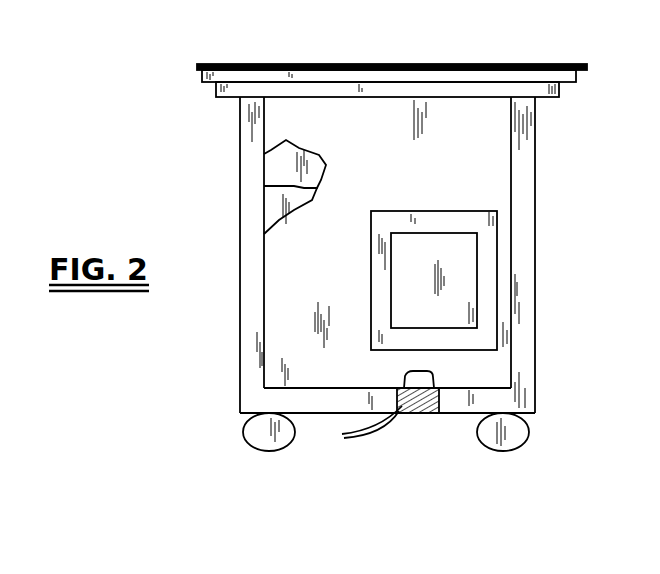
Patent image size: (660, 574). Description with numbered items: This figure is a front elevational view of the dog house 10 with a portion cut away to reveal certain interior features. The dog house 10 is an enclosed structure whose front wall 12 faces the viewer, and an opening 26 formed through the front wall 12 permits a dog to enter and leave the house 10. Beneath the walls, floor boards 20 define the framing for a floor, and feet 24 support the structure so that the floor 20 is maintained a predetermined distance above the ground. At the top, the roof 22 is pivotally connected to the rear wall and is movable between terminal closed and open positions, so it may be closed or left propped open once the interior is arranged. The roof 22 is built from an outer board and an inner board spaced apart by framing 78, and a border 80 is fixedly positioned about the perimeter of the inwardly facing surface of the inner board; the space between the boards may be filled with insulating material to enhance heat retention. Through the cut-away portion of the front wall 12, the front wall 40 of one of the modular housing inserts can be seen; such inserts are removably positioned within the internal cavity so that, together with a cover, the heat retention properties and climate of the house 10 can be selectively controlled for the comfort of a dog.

The dog house 10 is at (206, 306).
The front wall 12 is at (282, 358).
The floor boards 20 is at (386, 420).
The roof 22 is at (574, 62).
The feet 24 is at (248, 426).
The opening 26 is at (460, 303).
The front wall of insert 40 is at (268, 208).
The framing 78 is at (580, 74).
The border 80 is at (560, 92).